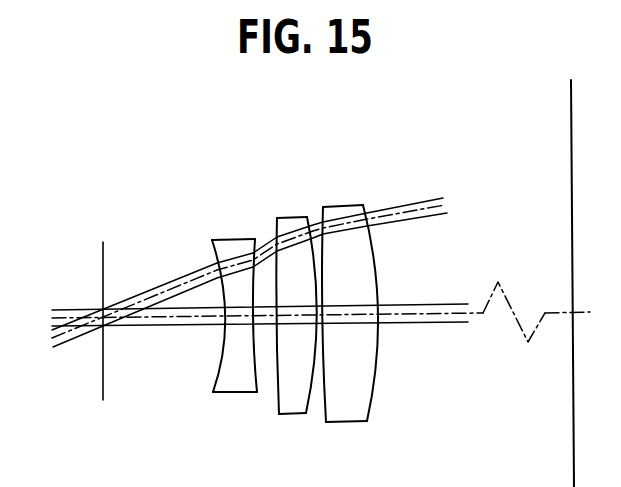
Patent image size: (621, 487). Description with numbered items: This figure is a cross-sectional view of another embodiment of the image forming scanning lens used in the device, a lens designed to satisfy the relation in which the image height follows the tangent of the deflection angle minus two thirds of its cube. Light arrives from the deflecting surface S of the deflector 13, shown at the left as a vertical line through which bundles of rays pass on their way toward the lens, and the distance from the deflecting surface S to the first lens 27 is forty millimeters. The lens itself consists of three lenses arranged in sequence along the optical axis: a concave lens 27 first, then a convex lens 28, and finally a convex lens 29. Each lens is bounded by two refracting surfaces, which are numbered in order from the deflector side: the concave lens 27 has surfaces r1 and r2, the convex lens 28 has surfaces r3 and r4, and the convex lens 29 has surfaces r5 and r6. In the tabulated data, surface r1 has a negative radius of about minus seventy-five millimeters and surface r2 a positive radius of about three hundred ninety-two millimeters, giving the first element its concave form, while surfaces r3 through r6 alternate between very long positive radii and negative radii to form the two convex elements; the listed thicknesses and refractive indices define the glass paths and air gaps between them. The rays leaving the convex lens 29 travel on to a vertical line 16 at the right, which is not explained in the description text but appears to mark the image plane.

The deflector 13 is at (85, 311).
The deflecting surface S is at (80, 390).
The image plane 16 is at (571, 109).
The concave lens 27 is at (223, 327).
The convex lens 28 is at (291, 315).
The convex lens 29 is at (353, 310).
The first lens surface r1 is at (213, 376).
The second lens surface r2 is at (245, 358).
The third lens surface r3 is at (277, 397).
The fourth lens surface r4 is at (305, 347).
The fifth lens surface r5 is at (327, 405).
The sixth lens surface r6 is at (370, 403).